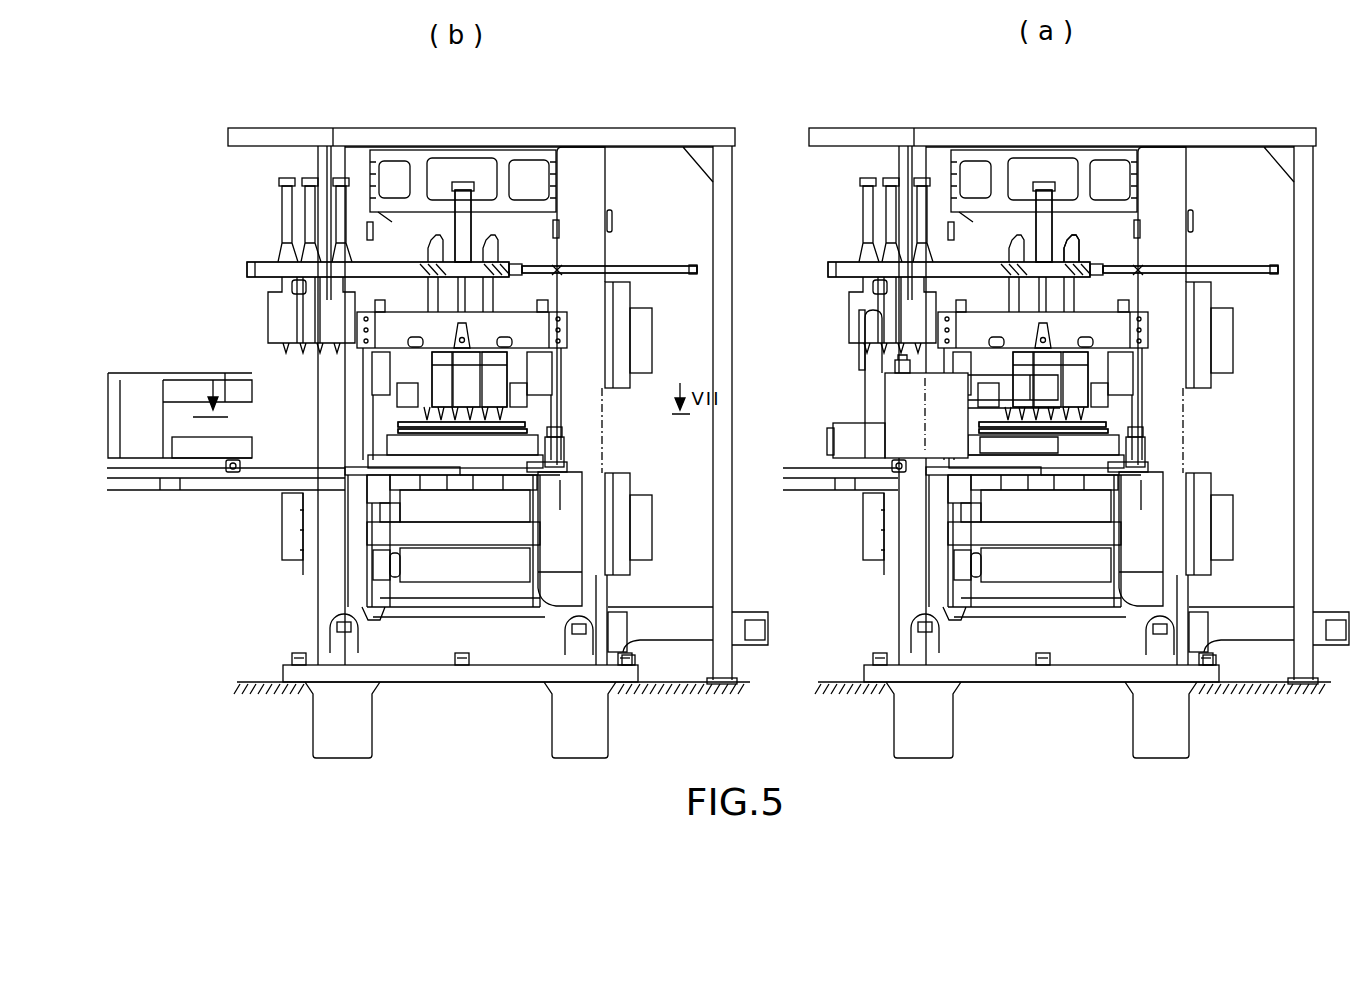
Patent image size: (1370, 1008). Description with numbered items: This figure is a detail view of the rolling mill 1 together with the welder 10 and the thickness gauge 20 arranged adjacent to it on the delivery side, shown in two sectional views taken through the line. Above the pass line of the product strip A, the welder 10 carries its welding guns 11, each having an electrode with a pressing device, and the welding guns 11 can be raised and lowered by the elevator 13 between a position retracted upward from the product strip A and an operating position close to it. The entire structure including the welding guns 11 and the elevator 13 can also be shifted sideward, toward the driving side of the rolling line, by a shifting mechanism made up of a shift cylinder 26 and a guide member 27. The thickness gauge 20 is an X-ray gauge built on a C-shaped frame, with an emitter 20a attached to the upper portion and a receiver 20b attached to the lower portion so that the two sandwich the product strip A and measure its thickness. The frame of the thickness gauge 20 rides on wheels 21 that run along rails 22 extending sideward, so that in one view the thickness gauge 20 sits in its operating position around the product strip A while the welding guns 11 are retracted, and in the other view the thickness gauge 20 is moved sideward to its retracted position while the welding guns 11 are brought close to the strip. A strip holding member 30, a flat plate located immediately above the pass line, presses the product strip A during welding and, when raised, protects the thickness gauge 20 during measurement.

The rolling mill 1 is at (330, 585).
The welder 10 is at (1085, 228).
The welding guns 11 is at (498, 378).
The elevator 13 is at (480, 216).
The thickness gauge 20 is at (187, 387).
The emitter 20a is at (233, 392).
The receiver 20b is at (236, 443).
The wheels 21 is at (233, 474).
The rails 22 is at (197, 490).
The shift cylinder 26 is at (657, 266).
The guide member 27 is at (390, 266).
The strip holding member 30 is at (530, 420).
The product strip A is at (541, 430).